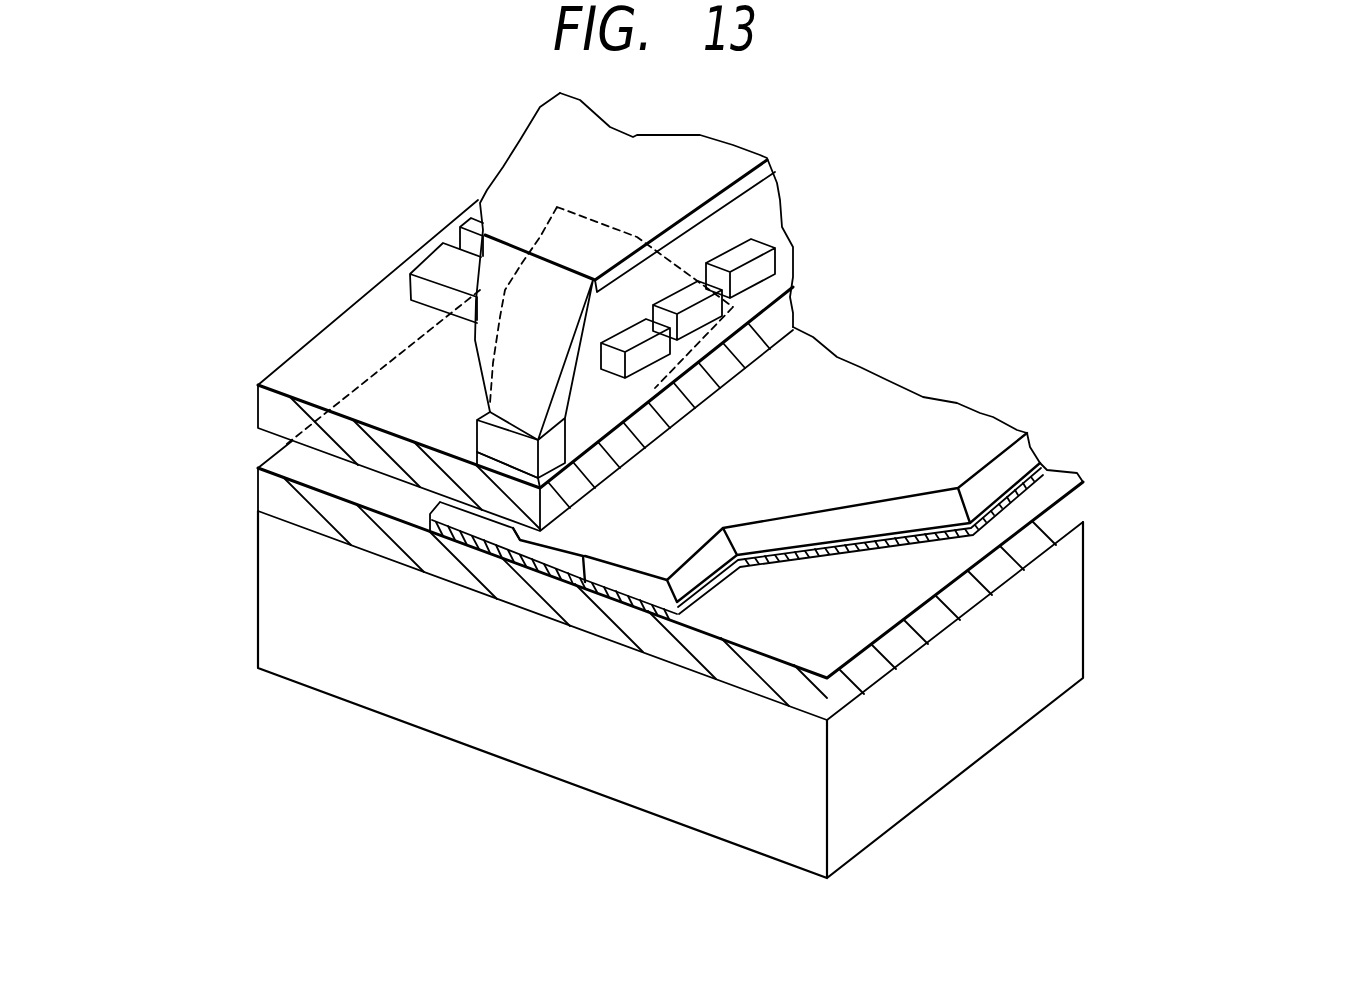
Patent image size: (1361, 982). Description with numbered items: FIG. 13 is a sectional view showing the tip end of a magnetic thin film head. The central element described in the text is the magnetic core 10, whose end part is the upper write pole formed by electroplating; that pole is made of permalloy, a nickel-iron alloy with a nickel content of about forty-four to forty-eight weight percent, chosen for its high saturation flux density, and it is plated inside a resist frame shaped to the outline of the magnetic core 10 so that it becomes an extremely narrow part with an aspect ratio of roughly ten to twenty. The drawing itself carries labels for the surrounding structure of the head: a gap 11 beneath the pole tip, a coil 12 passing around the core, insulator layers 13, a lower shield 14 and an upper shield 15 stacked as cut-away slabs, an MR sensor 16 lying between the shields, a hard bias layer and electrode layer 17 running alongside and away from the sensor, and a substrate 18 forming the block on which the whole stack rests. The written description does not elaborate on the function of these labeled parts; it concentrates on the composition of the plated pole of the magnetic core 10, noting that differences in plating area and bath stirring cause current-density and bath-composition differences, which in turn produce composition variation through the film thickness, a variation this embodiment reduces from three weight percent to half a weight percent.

The magnetic core 10 is at (493, 439).
The gap 11 is at (500, 458).
The coil 12 is at (753, 267).
The insulator layer 13 is at (730, 320).
The lower shield 14 is at (266, 493).
The upper shield 15 is at (284, 420).
The MR sensor 16 is at (520, 542).
The hard bias layer and electrode layer 17 is at (977, 414).
The substrate 18 is at (968, 747).